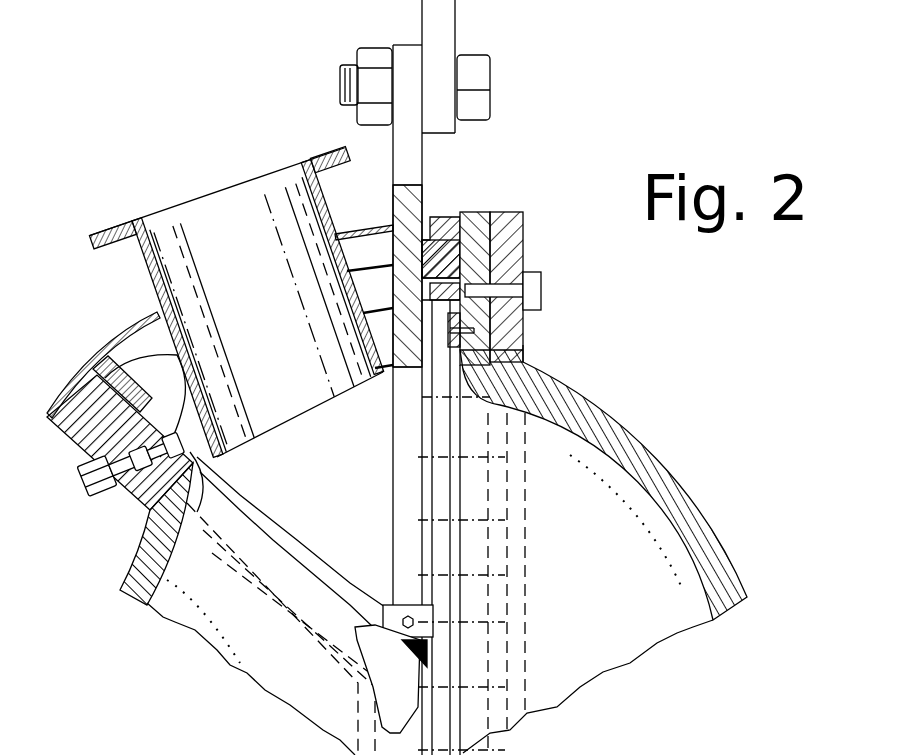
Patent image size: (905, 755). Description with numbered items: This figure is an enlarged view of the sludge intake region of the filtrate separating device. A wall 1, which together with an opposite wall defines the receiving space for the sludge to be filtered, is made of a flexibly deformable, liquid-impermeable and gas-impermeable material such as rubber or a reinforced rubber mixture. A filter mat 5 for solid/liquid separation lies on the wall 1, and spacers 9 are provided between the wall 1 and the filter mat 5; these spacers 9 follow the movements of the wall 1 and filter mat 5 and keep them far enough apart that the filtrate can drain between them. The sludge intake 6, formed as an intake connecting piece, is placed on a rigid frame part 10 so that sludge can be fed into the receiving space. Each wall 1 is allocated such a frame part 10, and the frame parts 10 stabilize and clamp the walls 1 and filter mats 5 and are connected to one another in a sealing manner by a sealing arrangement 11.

The wall 1 is at (620, 420).
The filter mat 5 is at (700, 592).
The sludge intake 6 is at (217, 203).
The spacers 9 is at (685, 490).
The frame part 10 is at (417, 198).
The sealing arrangement 11 is at (523, 232).